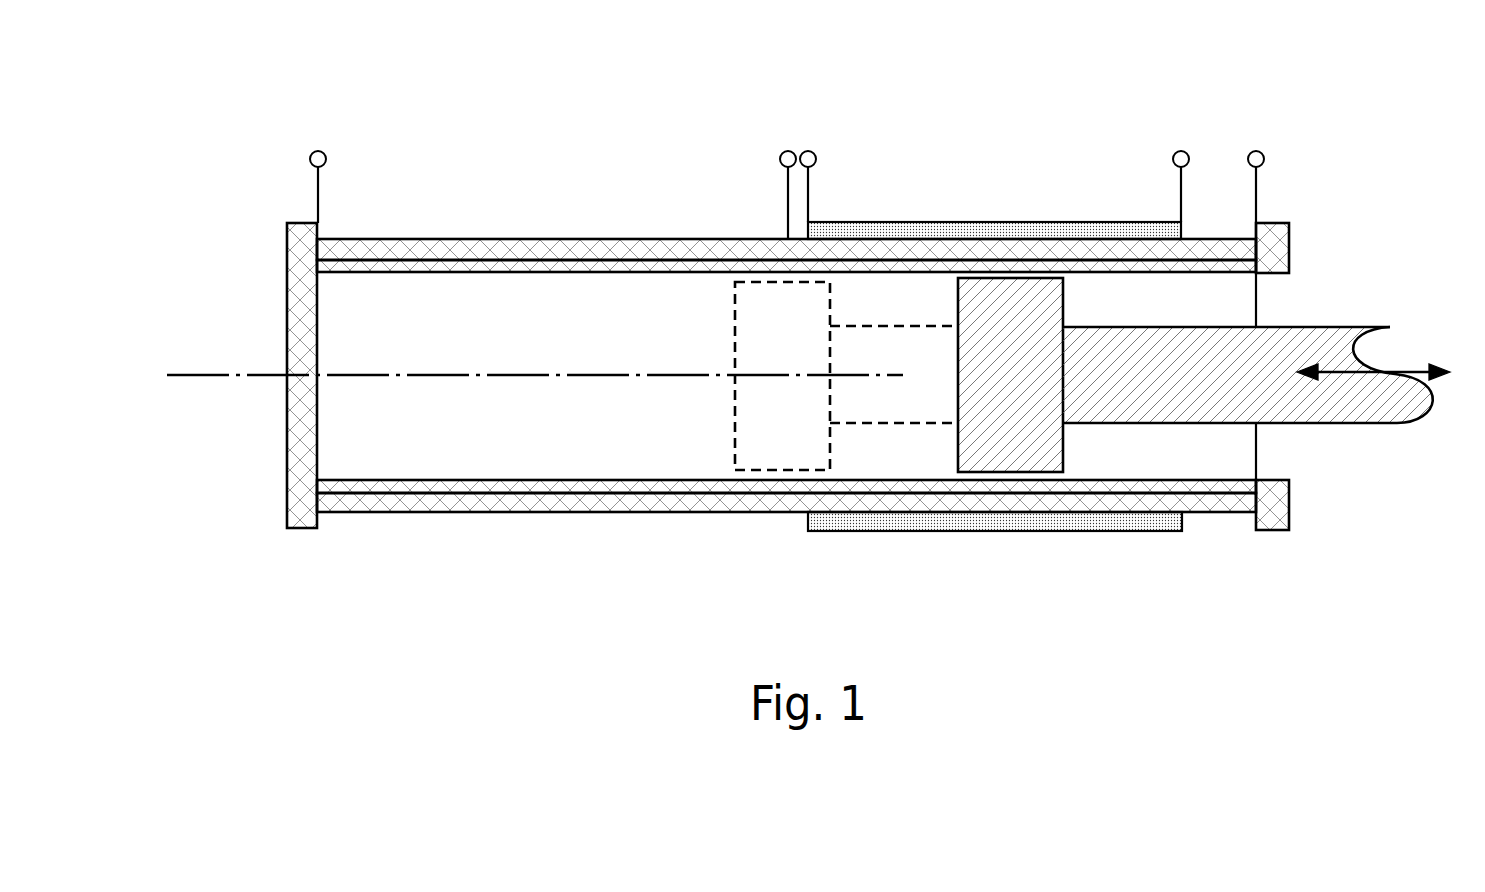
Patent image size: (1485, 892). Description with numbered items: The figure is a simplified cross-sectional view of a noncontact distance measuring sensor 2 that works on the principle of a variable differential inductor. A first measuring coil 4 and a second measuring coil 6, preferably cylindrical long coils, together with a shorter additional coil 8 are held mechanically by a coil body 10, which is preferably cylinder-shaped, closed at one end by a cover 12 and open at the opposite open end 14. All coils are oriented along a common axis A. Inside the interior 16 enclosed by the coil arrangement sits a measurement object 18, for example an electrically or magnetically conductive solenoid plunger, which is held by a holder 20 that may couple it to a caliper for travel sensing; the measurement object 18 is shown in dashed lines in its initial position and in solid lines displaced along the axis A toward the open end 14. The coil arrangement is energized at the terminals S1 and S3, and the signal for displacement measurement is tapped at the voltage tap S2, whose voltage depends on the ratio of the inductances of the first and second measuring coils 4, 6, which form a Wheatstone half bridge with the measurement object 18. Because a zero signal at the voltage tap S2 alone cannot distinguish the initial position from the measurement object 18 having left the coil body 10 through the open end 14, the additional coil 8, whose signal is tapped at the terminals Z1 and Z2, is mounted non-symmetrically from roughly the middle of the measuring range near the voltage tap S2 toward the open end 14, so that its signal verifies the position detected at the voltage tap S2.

The distance measuring sensor 2 is at (815, 312).
The first measuring coil 4 is at (540, 239).
The second measuring coil 6 is at (1215, 512).
The additional coil 8 is at (988, 222).
The coil body 10 is at (708, 493).
The cover 12 is at (287, 512).
The open end 14 is at (1320, 272).
The interior 16 is at (408, 312).
The measurement object 18 is at (778, 443).
The holder 20 is at (1330, 333).
The common axis A is at (222, 375).
The terminal S1 is at (314, 171).
The voltage tap S2 is at (776, 179).
The terminal S3 is at (1256, 299).
The terminal Z1 is at (824, 170).
The terminal Z2 is at (1182, 170).